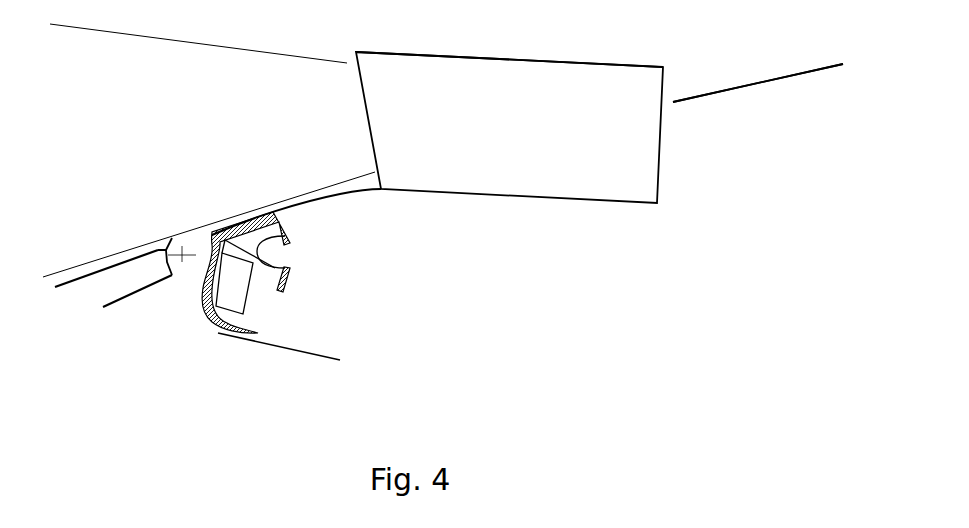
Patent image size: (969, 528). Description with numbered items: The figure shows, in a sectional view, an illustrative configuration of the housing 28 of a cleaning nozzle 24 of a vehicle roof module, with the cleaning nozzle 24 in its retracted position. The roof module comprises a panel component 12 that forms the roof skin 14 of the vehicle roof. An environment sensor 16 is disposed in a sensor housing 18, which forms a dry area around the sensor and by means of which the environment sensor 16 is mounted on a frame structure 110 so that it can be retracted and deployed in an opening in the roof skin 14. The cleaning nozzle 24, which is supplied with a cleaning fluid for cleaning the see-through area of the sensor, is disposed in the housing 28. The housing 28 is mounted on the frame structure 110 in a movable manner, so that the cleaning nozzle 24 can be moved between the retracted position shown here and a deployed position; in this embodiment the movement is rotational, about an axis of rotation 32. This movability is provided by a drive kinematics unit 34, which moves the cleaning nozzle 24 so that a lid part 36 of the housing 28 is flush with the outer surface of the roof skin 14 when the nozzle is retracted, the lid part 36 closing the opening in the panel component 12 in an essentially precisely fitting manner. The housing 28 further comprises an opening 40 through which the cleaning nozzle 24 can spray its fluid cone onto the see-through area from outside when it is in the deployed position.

The panel component 12 is at (697, 96).
The roof skin 14 is at (763, 81).
The environment sensor 16 is at (558, 87).
The sensor housing 18 is at (619, 63).
The cleaning nozzle 24 is at (238, 287).
The housing 28 is at (216, 328).
The axis of rotation 32 is at (182, 256).
The drive kinematics unit 34 is at (172, 237).
The lid part 36 is at (228, 217).
The opening 40 is at (290, 243).
The frame structure 110 is at (106, 270).